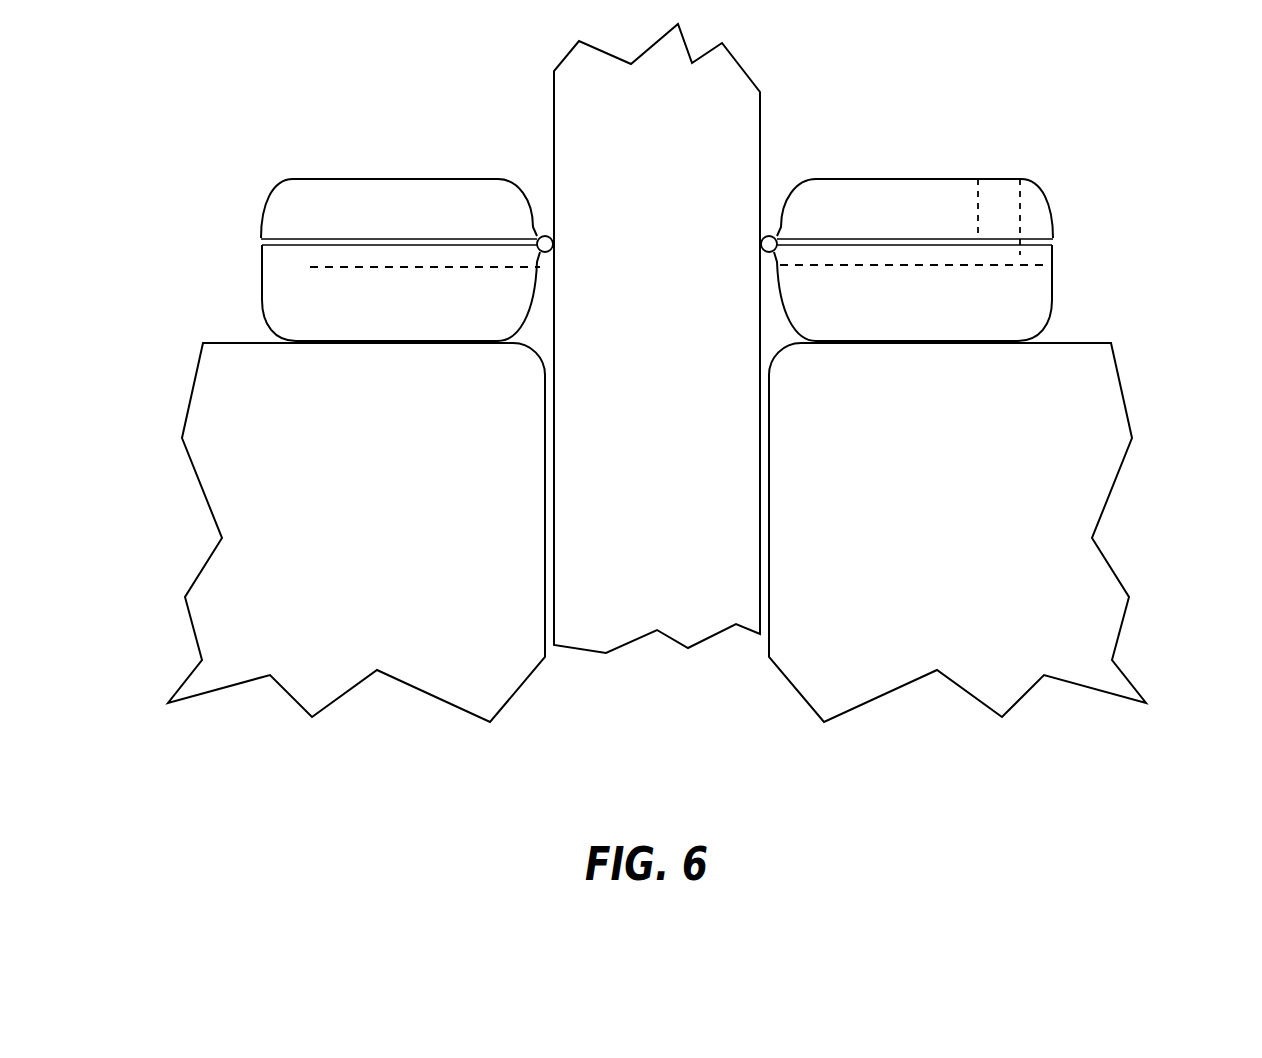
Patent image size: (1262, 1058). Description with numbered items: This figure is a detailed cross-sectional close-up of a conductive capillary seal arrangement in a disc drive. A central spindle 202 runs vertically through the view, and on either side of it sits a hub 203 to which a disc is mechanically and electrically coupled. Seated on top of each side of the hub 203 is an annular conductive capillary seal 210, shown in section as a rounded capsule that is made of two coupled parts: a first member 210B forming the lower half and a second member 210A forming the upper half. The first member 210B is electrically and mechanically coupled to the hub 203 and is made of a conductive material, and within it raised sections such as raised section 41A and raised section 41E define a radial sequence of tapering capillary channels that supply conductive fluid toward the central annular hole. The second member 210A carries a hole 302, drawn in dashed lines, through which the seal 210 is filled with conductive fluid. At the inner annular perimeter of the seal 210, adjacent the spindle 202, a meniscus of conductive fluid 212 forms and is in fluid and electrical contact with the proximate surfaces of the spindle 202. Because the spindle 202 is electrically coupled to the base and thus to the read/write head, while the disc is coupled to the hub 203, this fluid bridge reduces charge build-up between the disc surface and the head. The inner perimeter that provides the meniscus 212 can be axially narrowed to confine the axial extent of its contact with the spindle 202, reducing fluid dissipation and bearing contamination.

The spindle 202 is at (679, 545).
The hub 203 is at (401, 531).
The annular conductive capillary seal 210 is at (662, 260).
The second member 210A is at (414, 224).
The first member 210B is at (657, 293).
The meniscus of conductive fluid 212 is at (544, 240).
The raised section 41A is at (308, 263).
The raised section 41E is at (908, 253).
The hole 302 is at (996, 206).